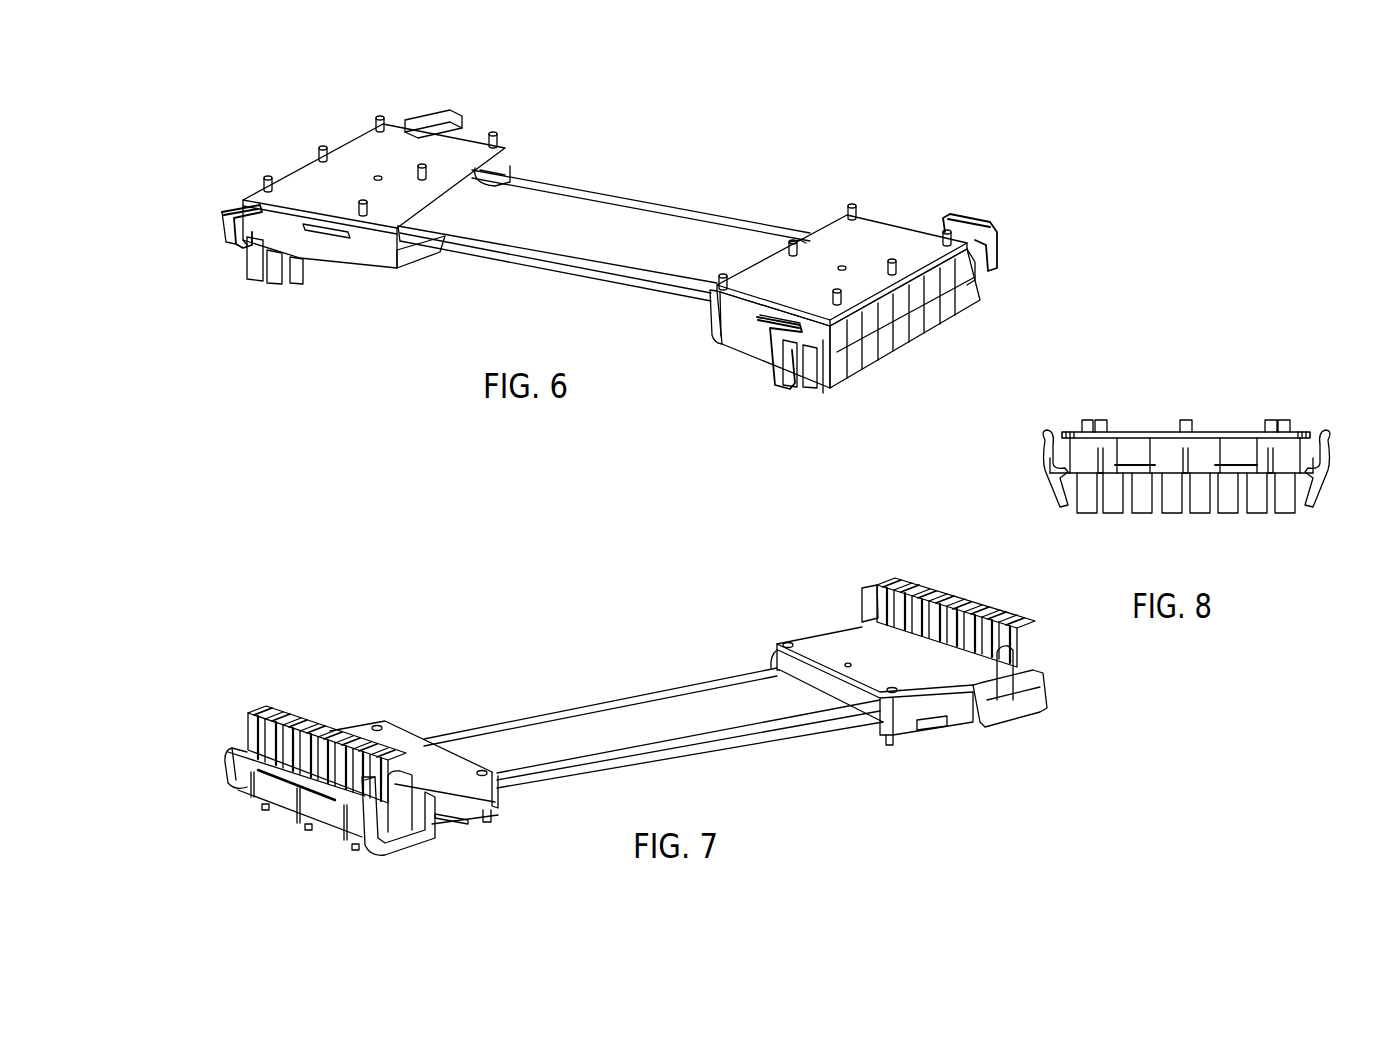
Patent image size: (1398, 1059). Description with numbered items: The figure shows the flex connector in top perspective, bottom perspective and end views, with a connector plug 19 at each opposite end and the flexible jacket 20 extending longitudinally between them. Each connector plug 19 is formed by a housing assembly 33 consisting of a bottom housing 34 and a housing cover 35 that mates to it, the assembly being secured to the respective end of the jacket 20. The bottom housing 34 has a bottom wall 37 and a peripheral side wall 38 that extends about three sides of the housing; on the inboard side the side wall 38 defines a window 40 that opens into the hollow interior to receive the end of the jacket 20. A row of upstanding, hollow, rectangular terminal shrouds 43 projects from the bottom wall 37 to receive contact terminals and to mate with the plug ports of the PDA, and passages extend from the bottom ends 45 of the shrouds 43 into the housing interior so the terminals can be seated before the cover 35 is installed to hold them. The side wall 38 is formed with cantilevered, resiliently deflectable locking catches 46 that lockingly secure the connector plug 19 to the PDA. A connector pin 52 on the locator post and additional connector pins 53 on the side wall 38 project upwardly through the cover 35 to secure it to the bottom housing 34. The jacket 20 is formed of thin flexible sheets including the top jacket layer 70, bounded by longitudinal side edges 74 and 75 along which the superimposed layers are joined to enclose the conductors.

In FIG. 6, the connector plug 19 is at (345, 272).
In FIG. 6, the jacket 20 is at (612, 204).
In FIG. 6, the housing assembly 33 is at (406, 254).
In FIG. 8, the housing assembly 33 is at (1250, 524).
In FIG. 7, the housing assembly 33 is at (379, 720).
In FIG. 6, the bottom housing 34 is at (372, 262).
In FIG. 8, the bottom housing 34 is at (1290, 455).
In FIG. 7, the bottom housing 34 is at (400, 747).
In FIG. 6, the housing cover 35 is at (350, 147).
In FIG. 8, the housing cover 35 is at (1210, 432).
In FIG. 7, the housing cover 35 is at (490, 818).
In FIG. 7, the bottom wall 37 is at (357, 733).
In FIG. 6, the peripheral side wall 38 is at (333, 256).
In FIG. 8, the peripheral side wall 38 is at (1160, 445).
In FIG. 7, the peripheral side wall 38 is at (460, 805).
In FIG. 6, the window 40 is at (514, 180).
In FIG. 7, the window 40 is at (777, 643).
In FIG. 6, the terminal shroud 43 is at (280, 280).
In FIG. 7, the terminal shroud 43 is at (292, 715).
In FIG. 6, the bottom end 45 is at (845, 384).
In FIG. 8, the bottom end 45 is at (1292, 516).
In FIG. 7, the bottom end 45 is at (265, 705).
In FIG. 6, the locking catch 46 is at (232, 226).
In FIG. 8, the locking catch 46 is at (1045, 440).
In FIG. 7, the locking catch 46 is at (235, 786).
In FIG. 6, the connector pin 52 is at (423, 172).
In FIG. 6, the connector pin 53 is at (382, 118).
In FIG. 6, the top jacket layer 70 is at (658, 225).
In FIG. 7, the top jacket layer 70 is at (680, 752).
In FIG. 6, the side edge 74 is at (532, 268).
In FIG. 7, the side edge 74 is at (590, 695).
In FIG. 6, the side edge 75 is at (583, 188).
In FIG. 7, the side edge 75 is at (750, 742).